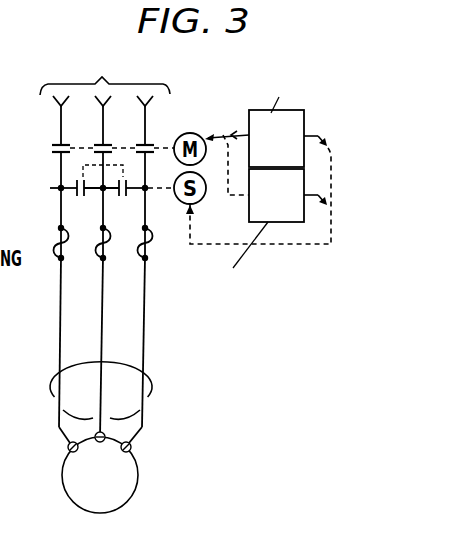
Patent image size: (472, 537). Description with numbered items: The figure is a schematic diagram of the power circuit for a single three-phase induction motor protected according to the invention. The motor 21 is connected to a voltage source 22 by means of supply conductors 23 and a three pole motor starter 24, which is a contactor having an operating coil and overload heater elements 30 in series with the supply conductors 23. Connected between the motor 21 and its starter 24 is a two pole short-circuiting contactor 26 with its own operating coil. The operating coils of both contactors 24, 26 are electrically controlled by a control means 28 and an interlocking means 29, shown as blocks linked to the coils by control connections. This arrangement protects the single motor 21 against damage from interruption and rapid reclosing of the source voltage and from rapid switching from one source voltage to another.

The motor 21 is at (71, 501).
The voltage source 22 is at (105, 78).
The supply conductors 23 is at (52, 390).
The motor starter 24 is at (95, 140).
The short-circuiting contactor 26 is at (98, 193).
The control means 28 is at (288, 152).
The interlocking means 29 is at (288, 208).
The overload heater elements 30 is at (96, 243).